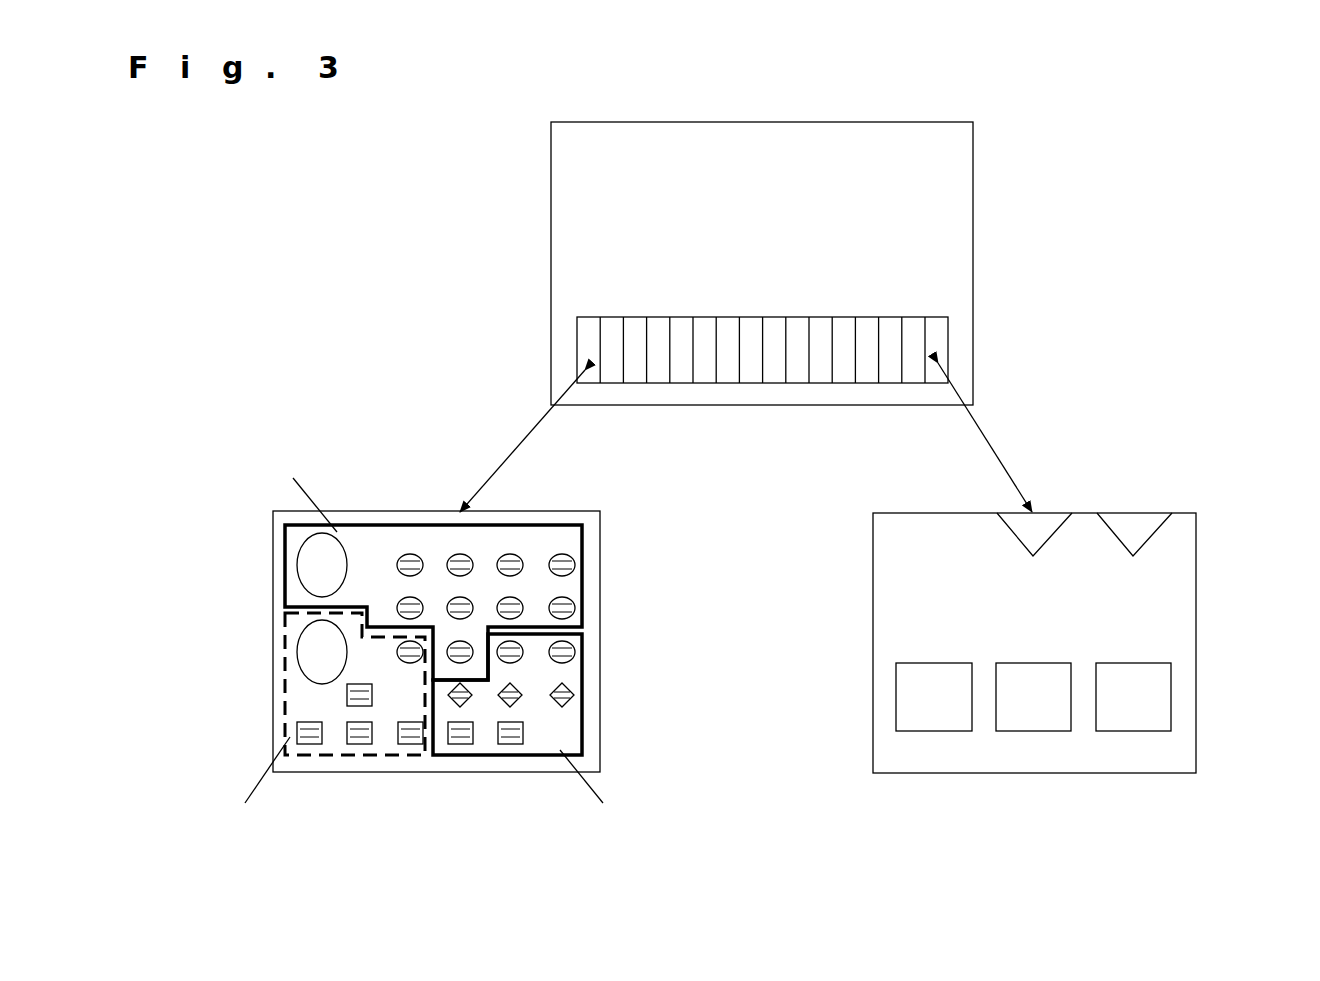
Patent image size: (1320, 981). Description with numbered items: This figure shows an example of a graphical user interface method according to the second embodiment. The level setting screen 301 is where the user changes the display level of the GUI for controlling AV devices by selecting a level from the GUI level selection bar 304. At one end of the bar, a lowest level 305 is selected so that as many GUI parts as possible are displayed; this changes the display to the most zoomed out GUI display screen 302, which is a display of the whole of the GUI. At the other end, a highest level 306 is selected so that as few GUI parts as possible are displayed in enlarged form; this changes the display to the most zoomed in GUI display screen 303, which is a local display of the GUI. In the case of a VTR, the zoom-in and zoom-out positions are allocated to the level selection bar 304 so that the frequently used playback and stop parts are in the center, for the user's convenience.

The level setting screen 301 is at (973, 277).
The most zoomed out GUI display screen 302 is at (600, 640).
The most zoomed in GUI display screen 303 is at (1196, 643).
The GUI level selection bar 304 is at (762, 385).
The lowest level 305 is at (518, 442).
The highest level 306 is at (992, 445).